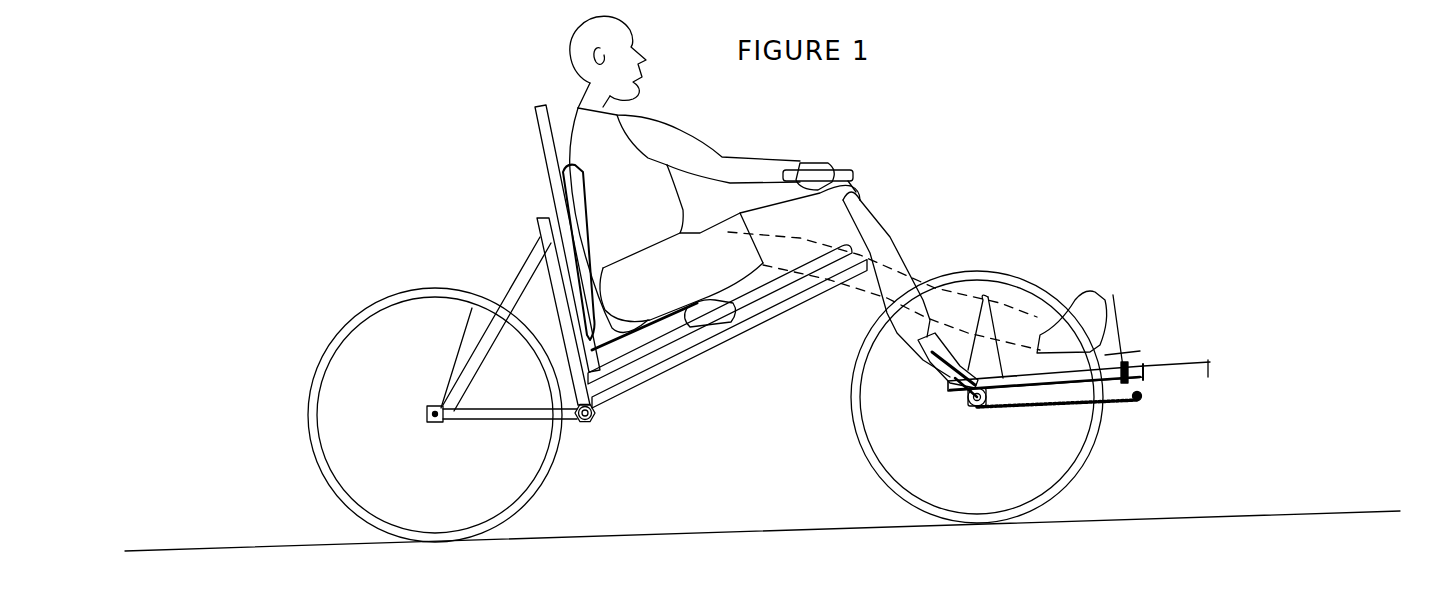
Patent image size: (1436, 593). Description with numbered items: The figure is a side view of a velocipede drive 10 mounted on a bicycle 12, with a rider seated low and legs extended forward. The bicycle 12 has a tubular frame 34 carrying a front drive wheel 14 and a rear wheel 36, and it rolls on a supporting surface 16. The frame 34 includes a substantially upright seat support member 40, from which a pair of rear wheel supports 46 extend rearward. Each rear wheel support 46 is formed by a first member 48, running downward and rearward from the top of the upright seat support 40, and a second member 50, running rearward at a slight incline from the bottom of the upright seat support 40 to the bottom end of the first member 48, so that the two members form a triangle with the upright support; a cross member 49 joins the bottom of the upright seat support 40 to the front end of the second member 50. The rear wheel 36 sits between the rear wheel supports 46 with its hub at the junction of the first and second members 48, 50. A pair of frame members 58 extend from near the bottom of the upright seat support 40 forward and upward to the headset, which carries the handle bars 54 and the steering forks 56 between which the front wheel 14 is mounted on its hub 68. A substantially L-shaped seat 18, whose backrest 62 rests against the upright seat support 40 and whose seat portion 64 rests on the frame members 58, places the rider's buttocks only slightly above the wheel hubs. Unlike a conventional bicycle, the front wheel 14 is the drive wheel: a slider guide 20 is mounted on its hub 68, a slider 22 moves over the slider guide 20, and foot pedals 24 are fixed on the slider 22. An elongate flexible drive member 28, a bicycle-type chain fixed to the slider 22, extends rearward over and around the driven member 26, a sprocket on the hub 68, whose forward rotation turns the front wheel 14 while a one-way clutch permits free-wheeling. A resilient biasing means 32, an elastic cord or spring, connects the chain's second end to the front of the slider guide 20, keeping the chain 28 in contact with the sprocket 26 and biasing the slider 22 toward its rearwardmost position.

The velocipede drive 10 is at (1123, 202).
The bicycle 12 is at (375, 162).
The front drive wheel 14 is at (917, 397).
The supporting surface 16 is at (762, 546).
The seat 18 is at (529, 238).
The slider guide 20 is at (1178, 400).
The slider 22 is at (1094, 335).
The foot pedals 24 is at (1185, 282).
The driven member 26 is at (960, 439).
The elongate flexible drive member 28 is at (1059, 417).
The biasing means 32 is at (1139, 385).
The tubular frame 34 is at (585, 462).
The rear wheel 36 is at (410, 415).
The upright seat support member 40 is at (526, 311).
The rear wheel supports 46 is at (423, 365).
The first member 48 is at (497, 324).
The cross member 49 is at (636, 436).
The second member 50 is at (502, 437).
The handle bars 54 is at (831, 143).
The steering forks 56 is at (934, 359).
The frame members 58 is at (727, 335).
The backrest 62 is at (606, 252).
The seat portion 64 is at (664, 302).
The hub 68 is at (935, 415).